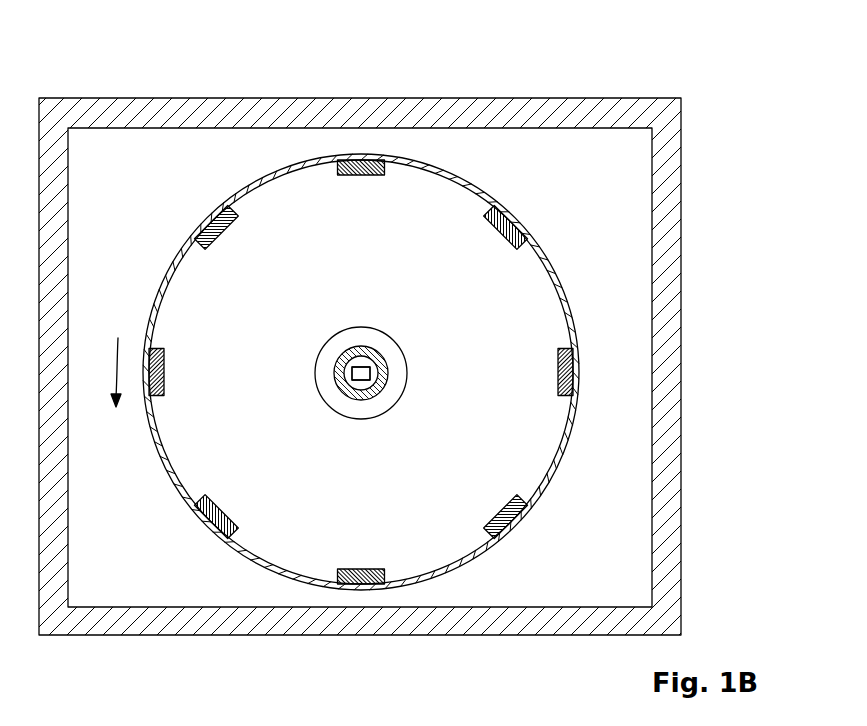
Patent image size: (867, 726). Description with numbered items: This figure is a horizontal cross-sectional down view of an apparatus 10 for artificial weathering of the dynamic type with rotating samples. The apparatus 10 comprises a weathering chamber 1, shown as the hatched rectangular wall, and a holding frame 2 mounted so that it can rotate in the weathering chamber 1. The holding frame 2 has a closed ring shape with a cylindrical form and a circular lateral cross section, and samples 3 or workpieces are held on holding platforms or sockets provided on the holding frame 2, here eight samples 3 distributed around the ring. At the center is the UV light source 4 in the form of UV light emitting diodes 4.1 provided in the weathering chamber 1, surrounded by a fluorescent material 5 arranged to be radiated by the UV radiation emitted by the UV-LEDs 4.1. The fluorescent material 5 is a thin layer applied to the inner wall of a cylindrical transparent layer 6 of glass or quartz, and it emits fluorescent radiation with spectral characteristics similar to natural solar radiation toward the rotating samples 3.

The apparatus 10 is at (91, 63).
The weathering chamber 1 is at (676, 160).
The holding frame 2 is at (545, 249).
The samples 3 is at (166, 366).
The UV light source 4 is at (361, 373).
The UV light emitting diodes 4.1 is at (372, 383).
The fluorescent material 5 is at (374, 350).
The transparent layer 6 is at (345, 338).